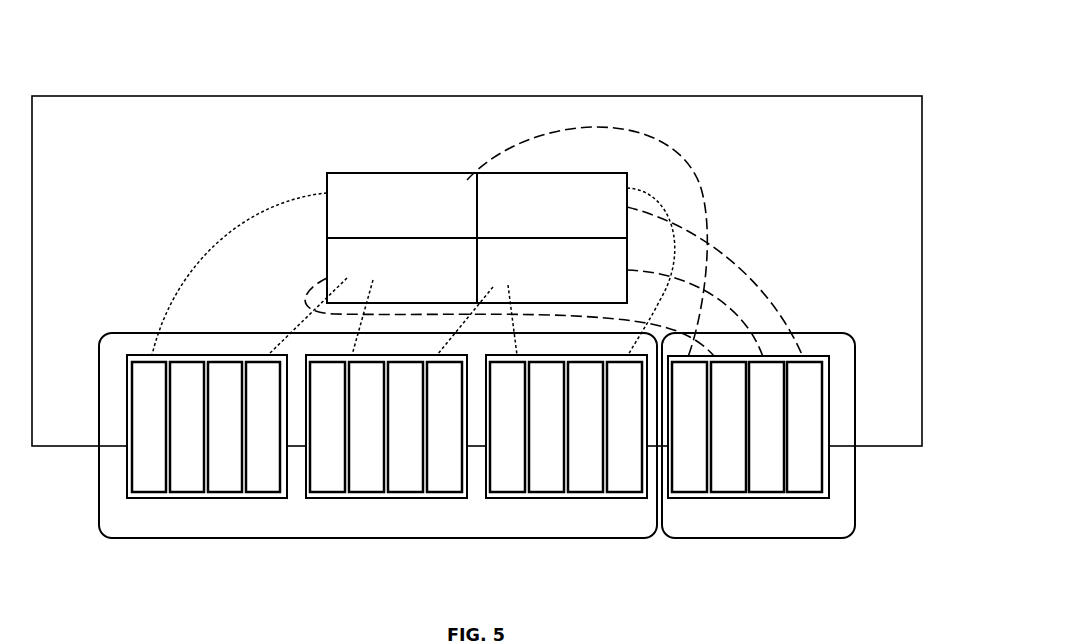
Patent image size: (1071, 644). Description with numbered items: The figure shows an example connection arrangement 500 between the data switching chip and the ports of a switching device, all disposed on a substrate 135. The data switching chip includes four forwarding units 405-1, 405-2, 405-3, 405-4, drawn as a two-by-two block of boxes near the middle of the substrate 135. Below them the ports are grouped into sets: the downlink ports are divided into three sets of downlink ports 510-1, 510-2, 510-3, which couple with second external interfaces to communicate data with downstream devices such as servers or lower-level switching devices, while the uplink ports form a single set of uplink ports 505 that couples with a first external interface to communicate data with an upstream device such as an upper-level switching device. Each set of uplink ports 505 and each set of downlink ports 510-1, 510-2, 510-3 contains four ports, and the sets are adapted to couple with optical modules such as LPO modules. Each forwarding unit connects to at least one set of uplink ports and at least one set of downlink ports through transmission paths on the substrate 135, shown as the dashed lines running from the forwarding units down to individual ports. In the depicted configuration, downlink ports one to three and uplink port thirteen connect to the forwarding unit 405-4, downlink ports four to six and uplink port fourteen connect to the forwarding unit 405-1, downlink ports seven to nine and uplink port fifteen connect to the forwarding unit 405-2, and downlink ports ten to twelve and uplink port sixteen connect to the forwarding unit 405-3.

The connection arrangement 500 is at (179, 47).
The substrate 135 is at (907, 146).
The forwarding unit 405-1 is at (402, 270).
The forwarding unit 405-2 is at (552, 270).
The forwarding unit 405-3 is at (552, 205).
The forwarding unit 405-4 is at (402, 205).
The set of uplink ports 505 is at (828, 355).
The set of downlink ports 510-1 is at (127, 498).
The set of downlink ports 510-2 is at (305, 498).
The set of downlink ports 510-3 is at (486, 498).